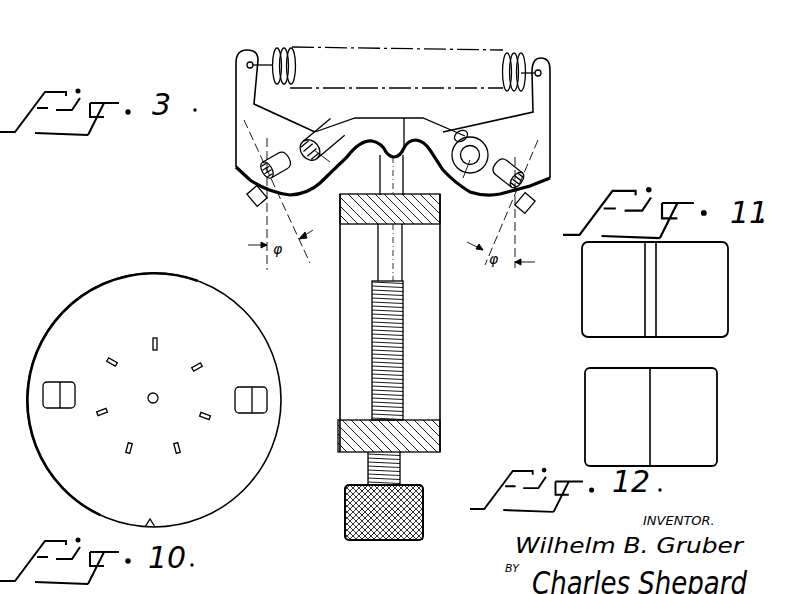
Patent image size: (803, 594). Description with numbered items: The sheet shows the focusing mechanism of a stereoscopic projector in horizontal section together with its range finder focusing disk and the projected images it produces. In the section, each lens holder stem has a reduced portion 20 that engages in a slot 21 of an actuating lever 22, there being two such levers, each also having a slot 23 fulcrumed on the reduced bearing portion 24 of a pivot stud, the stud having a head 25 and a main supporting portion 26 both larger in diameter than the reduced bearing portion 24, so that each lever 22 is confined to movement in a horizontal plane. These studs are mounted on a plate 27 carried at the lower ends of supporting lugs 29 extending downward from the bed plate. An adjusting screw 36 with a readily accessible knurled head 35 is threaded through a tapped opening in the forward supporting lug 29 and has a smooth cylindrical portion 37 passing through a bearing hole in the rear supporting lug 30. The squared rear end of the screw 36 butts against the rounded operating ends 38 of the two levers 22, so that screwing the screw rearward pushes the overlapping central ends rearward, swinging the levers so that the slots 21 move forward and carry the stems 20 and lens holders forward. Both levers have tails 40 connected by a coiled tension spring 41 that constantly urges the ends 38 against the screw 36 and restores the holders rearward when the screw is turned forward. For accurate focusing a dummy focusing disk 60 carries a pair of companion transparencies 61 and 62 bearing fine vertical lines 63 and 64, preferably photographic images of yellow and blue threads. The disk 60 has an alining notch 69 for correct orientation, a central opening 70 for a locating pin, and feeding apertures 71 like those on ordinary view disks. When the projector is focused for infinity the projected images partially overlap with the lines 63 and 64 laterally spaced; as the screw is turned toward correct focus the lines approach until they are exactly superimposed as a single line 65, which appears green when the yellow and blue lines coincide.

In FIG. 3, the reduced portion 20 is at (259, 178).
In FIG. 3, the slot 21 is at (248, 193).
In FIG. 3, the actuating lever 22 is at (237, 98).
In FIG. 3, the slot 23 is at (318, 130).
In FIG. 3, the reduced bearing portion 24 is at (401, 172).
In FIG. 3, the head 25 is at (484, 149).
In FIG. 3, the main supporting portion 26 is at (323, 139).
In FIG. 3, the plate 27 is at (441, 367).
In FIG. 3, the supporting lug 29 is at (433, 431).
In FIG. 3, the rear supporting lug 30 is at (438, 212).
In FIG. 3, the knurled head 35 is at (406, 541).
In FIG. 3, the adjusting screw 36 is at (403, 338).
In FIG. 3, the smooth cylindrical portion 37 is at (402, 240).
In FIG. 3, the rounded operating end 38 is at (378, 151).
In FIG. 3, the tail 40 is at (240, 64).
In FIG. 3, the coiled tension spring 41 is at (293, 46).
In FIG. 10, the focusing disk 60 is at (193, 283).
In FIG. 10, the transparency 61 is at (72, 397).
In FIG. 10, the transparency 62 is at (235, 399).
In FIG. 10, the vertical line 63 is at (60, 383).
In FIG. 11, the vertical line 63 is at (644, 290).
In FIG. 10, the vertical line 64 is at (255, 390).
In FIG. 11, the vertical line 64 is at (657, 297).
In FIG. 12, the single line 65 is at (652, 417).
In FIG. 10, the alining notch 69 is at (150, 528).
In FIG. 10, the central opening 70 is at (157, 397).
In FIG. 10, the feeding aperture 71 is at (160, 343).